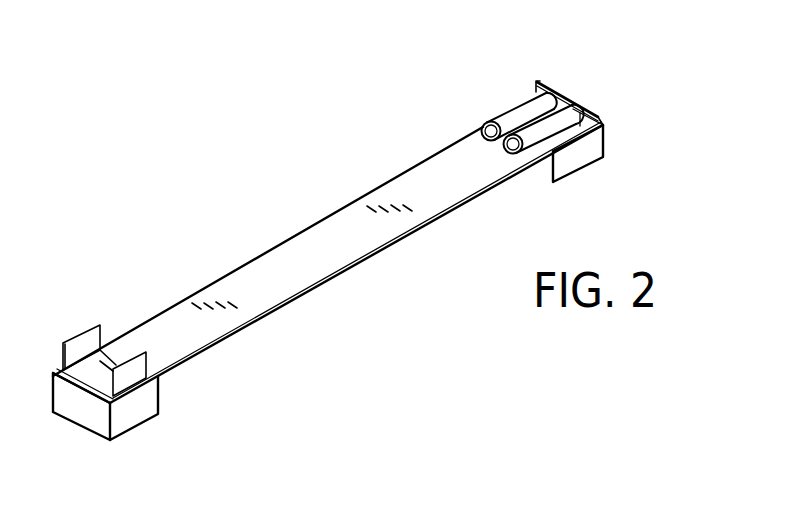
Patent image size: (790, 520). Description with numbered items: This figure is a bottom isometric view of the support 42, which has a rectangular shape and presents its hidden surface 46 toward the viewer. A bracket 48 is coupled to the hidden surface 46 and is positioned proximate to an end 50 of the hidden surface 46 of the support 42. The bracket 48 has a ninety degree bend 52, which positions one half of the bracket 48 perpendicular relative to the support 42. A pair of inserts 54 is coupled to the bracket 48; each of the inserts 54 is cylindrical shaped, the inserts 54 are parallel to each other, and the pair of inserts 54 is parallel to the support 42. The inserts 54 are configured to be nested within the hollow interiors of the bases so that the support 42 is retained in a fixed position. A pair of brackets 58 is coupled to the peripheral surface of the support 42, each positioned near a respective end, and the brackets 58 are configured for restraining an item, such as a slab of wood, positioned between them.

The support 42 is at (622, 66).
The hidden surface 46 is at (283, 283).
The bracket 48 is at (537, 80).
The end 50 is at (488, 86).
The ninety degree bend 52 is at (598, 120).
The inserts 54 is at (486, 128).
The brackets 58 is at (143, 412).